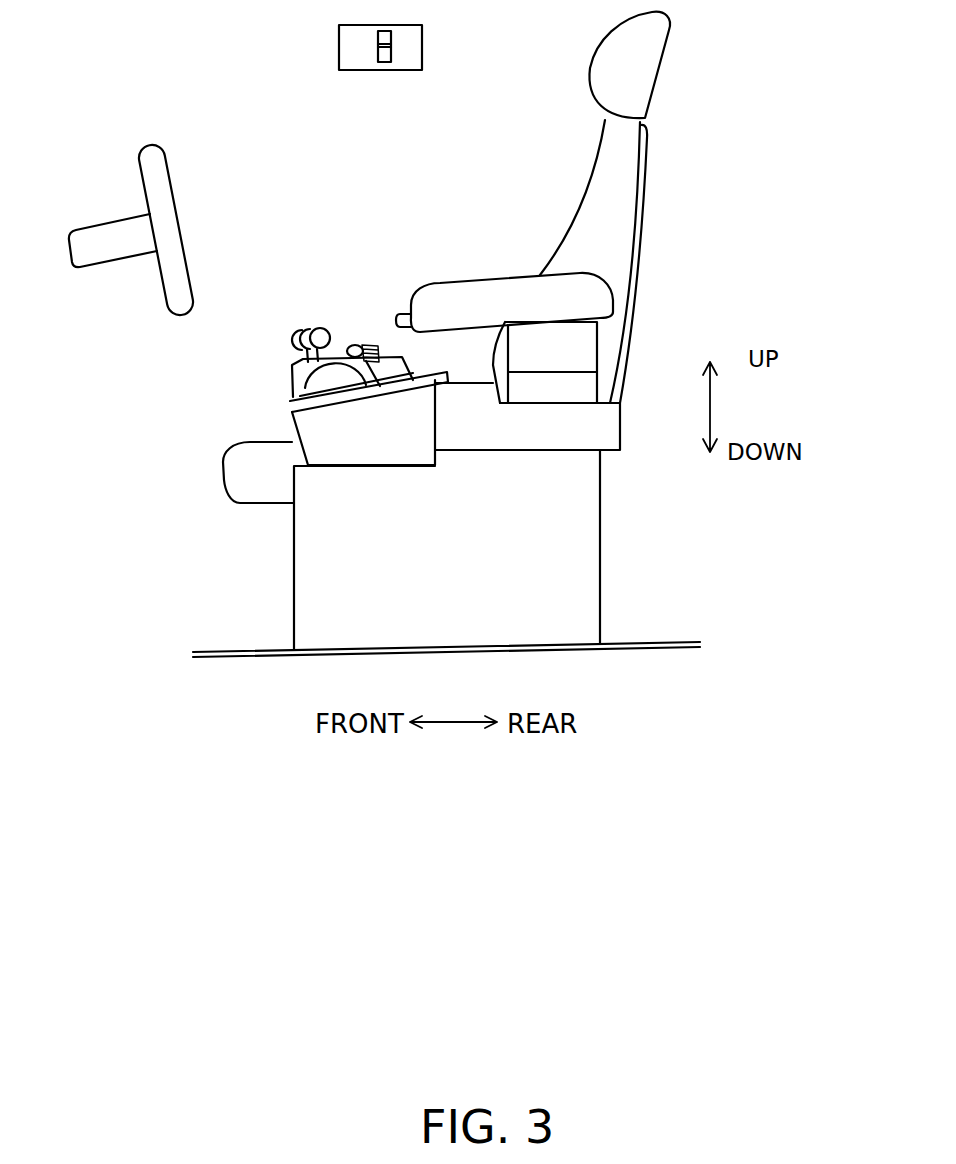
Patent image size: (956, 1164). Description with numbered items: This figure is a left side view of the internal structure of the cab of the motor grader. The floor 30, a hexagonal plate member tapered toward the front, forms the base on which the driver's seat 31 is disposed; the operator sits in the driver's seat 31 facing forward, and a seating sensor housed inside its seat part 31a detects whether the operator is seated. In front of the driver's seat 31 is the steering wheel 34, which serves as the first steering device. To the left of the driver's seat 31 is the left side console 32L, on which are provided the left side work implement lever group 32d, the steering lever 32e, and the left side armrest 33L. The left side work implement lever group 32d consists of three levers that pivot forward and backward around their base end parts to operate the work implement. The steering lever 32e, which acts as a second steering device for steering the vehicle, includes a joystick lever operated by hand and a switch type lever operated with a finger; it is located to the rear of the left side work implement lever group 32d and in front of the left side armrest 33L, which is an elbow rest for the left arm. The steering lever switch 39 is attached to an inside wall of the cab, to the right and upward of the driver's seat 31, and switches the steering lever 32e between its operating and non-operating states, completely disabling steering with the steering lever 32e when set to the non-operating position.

The floor 30 is at (662, 645).
The driver's seat 31 is at (603, 210).
The seat part 31a is at (225, 487).
The left side console 32L is at (292, 410).
The left side work implement lever group 32d is at (302, 326).
The steering lever 32e is at (357, 347).
The left side armrest 33L is at (588, 296).
The steering wheel 34 is at (170, 187).
The steering lever switch 39 is at (378, 62).